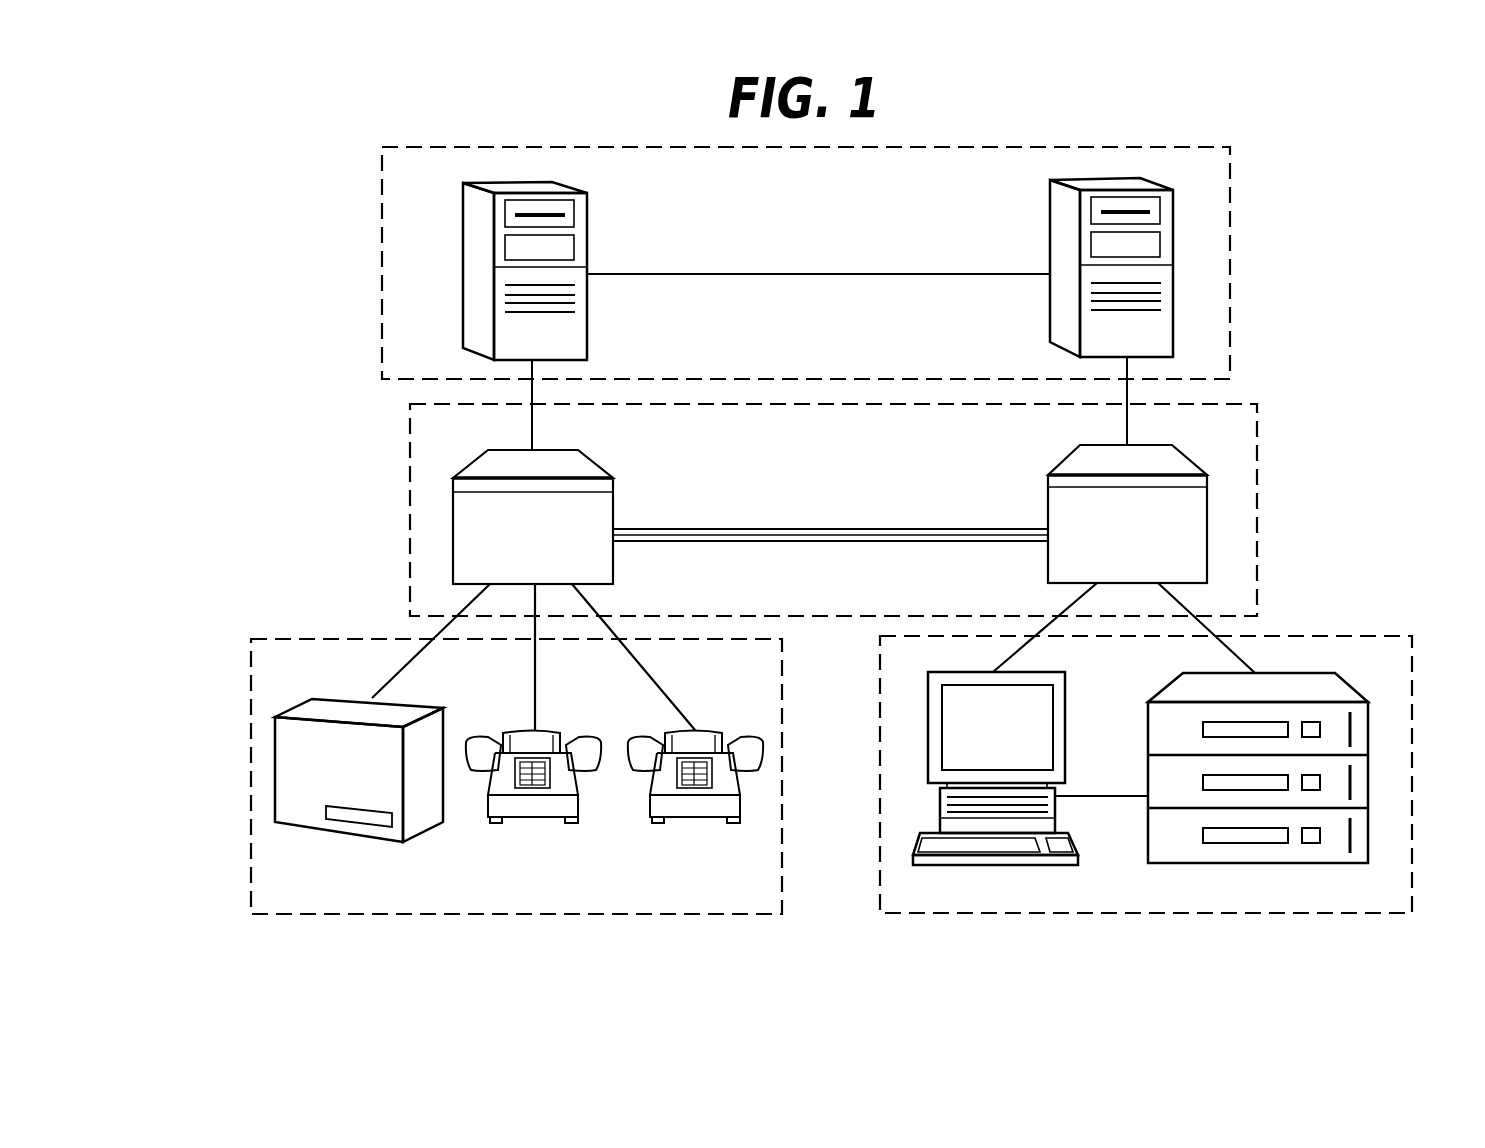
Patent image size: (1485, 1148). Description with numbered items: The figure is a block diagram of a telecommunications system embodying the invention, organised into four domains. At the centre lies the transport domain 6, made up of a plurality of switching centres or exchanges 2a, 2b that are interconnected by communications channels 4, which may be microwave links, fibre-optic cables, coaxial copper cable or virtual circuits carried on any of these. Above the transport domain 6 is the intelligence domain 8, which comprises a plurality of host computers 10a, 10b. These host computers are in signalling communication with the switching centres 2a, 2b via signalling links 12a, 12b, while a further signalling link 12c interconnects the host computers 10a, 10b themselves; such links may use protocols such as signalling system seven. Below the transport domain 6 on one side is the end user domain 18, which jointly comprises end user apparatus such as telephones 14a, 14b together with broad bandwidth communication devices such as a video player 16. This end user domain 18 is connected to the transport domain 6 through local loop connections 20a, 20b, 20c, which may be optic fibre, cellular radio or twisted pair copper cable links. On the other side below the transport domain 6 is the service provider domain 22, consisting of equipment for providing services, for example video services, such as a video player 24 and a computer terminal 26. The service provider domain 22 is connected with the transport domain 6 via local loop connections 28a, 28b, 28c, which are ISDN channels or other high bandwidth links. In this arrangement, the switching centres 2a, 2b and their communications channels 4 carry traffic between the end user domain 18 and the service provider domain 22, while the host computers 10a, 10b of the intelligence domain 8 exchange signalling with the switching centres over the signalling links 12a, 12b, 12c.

The switching centre 2a is at (453, 525).
The switching centre 2b is at (1207, 527).
The communications channels 4 is at (893, 528).
The transport domain 6 is at (1257, 445).
The intelligence domain 8 is at (1232, 265).
The host computer 10a is at (502, 182).
The host computer 10b is at (1113, 178).
The signalling link 12a is at (537, 372).
The signalling link 12b is at (1120, 366).
The signalling link 12c is at (860, 274).
The telephone 14a is at (530, 818).
The telephone 14b is at (692, 818).
The video player 16 is at (353, 835).
The end user domain 18 is at (247, 692).
The local loop connection 20a is at (407, 663).
The local loop connection 20b is at (538, 657).
The local loop connection 20c is at (648, 668).
The service provider domain 22 is at (1412, 693).
The video player 24 is at (1368, 792).
The computer terminal 26 is at (927, 748).
The local loop connection 28a is at (1020, 652).
The local loop connection 28b is at (1247, 658).
The local loop connection 28c is at (1138, 796).